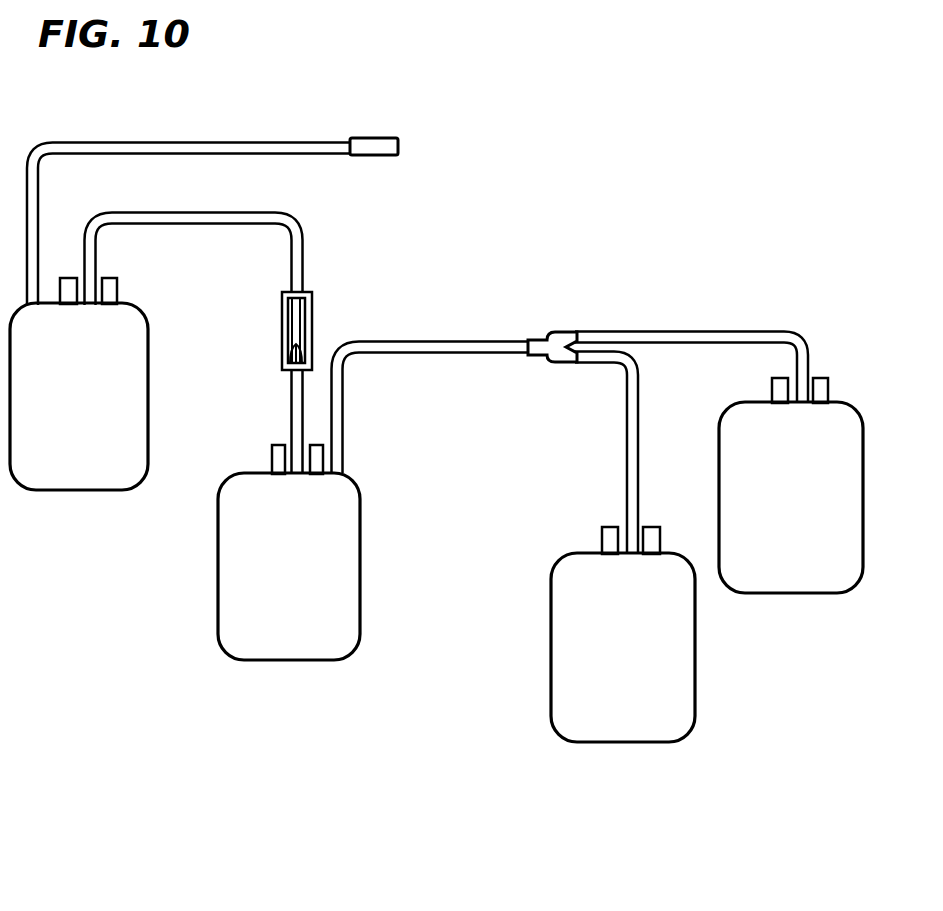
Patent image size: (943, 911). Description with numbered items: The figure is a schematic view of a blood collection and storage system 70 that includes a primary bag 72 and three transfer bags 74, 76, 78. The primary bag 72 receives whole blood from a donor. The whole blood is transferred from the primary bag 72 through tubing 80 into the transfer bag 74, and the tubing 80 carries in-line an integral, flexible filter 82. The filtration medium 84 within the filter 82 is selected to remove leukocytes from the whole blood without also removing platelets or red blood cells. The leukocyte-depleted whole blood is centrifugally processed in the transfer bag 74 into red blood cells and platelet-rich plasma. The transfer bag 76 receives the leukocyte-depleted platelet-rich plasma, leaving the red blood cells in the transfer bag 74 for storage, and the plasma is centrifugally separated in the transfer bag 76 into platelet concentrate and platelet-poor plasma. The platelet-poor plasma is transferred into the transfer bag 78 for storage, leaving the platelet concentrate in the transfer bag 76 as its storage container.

The system 70 is at (458, 228).
The primary bag 72 is at (122, 335).
The transfer bag 74 is at (337, 525).
The transfer bag 76 is at (830, 435).
The transfer bag 78 is at (673, 655).
The tubing 80 is at (301, 256).
The filter 82 is at (294, 339).
The filtration medium 84 is at (285, 358).